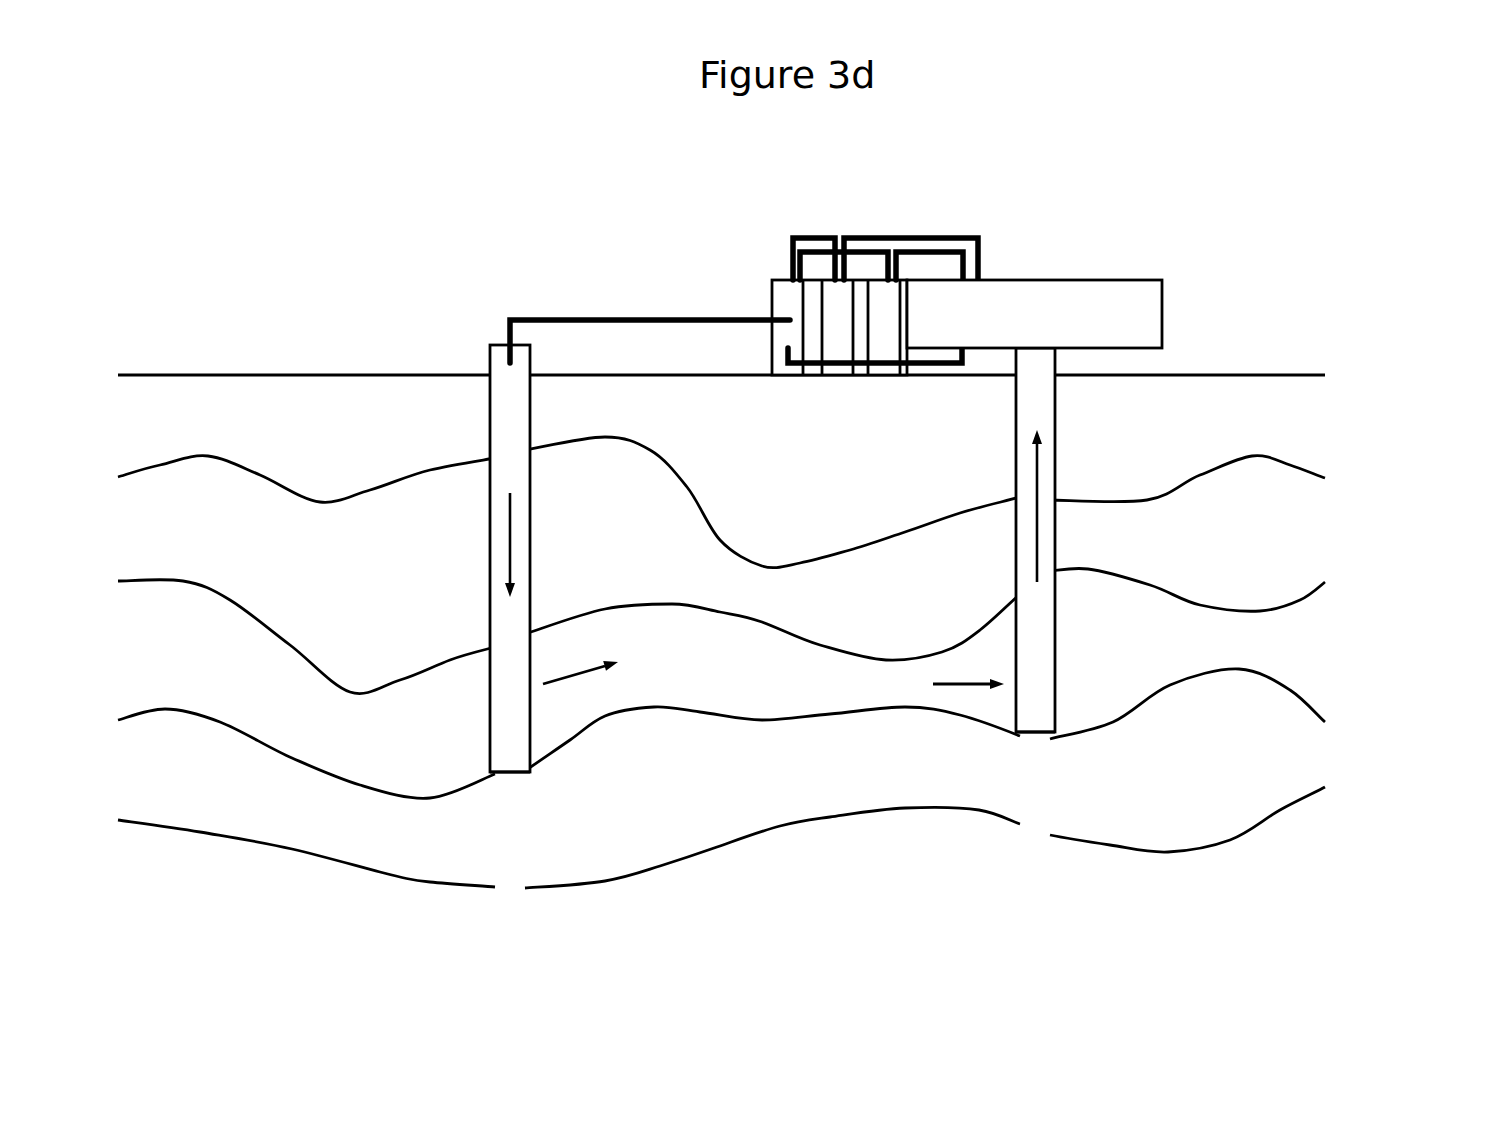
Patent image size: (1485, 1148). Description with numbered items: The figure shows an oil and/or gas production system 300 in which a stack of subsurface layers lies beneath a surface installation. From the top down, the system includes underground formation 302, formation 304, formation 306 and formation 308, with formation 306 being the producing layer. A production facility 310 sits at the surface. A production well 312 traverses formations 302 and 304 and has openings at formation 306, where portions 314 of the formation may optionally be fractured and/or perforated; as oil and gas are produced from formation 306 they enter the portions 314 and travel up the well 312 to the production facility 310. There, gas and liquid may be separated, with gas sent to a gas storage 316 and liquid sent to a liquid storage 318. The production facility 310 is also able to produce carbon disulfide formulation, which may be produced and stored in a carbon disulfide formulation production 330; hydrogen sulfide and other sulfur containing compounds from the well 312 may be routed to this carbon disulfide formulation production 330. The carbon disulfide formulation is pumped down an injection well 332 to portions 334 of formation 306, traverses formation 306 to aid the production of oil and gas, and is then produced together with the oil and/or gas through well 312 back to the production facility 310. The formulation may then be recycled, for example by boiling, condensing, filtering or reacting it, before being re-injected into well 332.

The system 300 is at (499, 210).
The underground formation 302 is at (721, 499).
The formation 304 is at (721, 603).
The formation 306 is at (721, 704).
The formation 308 is at (721, 801).
The production facility 310 is at (1012, 329).
The well 312 is at (1056, 409).
The portions of formation 314 is at (985, 705).
The gas storage 316 is at (886, 311).
The liquid storage 318 is at (845, 311).
The carbon disulfide formulation production 330 is at (775, 243).
The well 332 is at (512, 422).
The portions of formation 334 is at (553, 717).